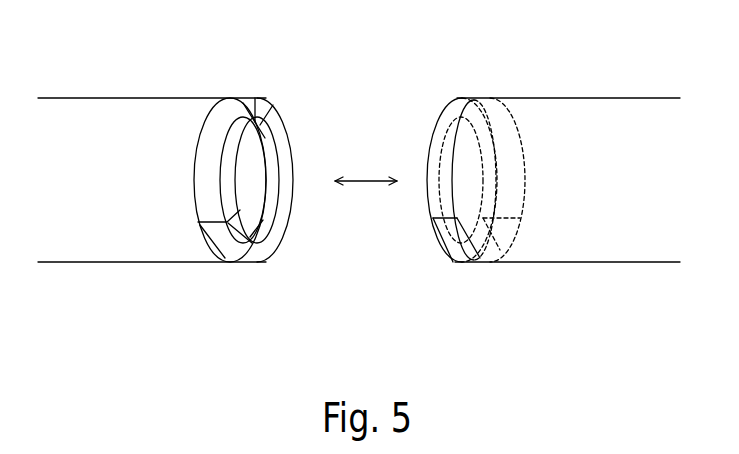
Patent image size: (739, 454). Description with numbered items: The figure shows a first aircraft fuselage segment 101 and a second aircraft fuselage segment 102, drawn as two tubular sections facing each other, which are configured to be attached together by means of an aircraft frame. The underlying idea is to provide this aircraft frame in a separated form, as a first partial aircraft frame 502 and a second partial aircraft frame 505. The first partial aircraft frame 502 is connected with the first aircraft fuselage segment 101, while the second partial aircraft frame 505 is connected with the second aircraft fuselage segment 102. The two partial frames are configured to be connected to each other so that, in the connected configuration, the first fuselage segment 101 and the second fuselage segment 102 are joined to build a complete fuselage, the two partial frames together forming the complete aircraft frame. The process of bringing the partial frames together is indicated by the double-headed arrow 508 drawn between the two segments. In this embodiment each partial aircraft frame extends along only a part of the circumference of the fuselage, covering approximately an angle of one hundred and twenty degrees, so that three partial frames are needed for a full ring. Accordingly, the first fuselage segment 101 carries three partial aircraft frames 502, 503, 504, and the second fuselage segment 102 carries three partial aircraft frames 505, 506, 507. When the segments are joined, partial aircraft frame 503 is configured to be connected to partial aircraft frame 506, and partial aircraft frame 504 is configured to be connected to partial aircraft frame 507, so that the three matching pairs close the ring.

The first aircraft fuselage segment 101 is at (120, 123).
The second aircraft fuselage segment 102 is at (597, 115).
The first partial aircraft frame 502 is at (277, 115).
The partial aircraft frame 503 is at (217, 120).
The partial aircraft frame 504 is at (268, 262).
The second partial aircraft frame 505 is at (495, 125).
The partial aircraft frame 506 is at (438, 120).
The partial aircraft frame 507 is at (453, 262).
The arrow 508 is at (370, 182).